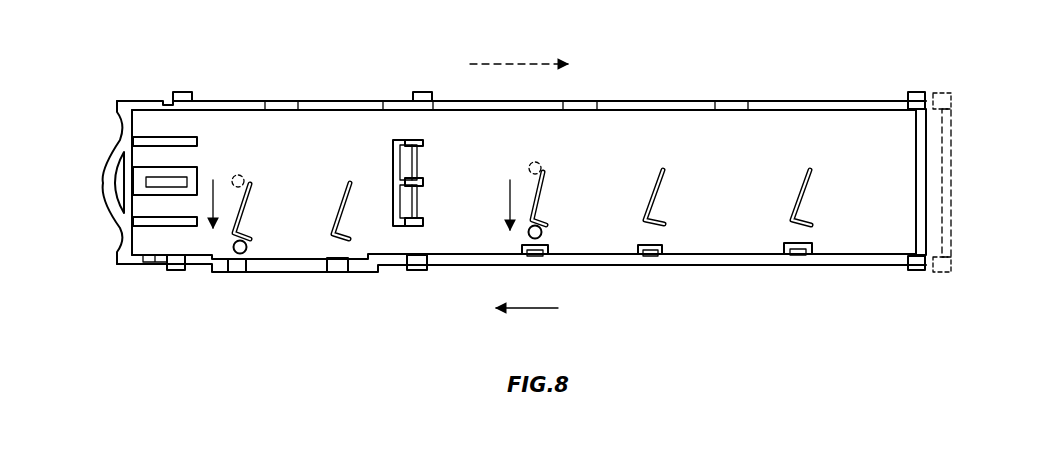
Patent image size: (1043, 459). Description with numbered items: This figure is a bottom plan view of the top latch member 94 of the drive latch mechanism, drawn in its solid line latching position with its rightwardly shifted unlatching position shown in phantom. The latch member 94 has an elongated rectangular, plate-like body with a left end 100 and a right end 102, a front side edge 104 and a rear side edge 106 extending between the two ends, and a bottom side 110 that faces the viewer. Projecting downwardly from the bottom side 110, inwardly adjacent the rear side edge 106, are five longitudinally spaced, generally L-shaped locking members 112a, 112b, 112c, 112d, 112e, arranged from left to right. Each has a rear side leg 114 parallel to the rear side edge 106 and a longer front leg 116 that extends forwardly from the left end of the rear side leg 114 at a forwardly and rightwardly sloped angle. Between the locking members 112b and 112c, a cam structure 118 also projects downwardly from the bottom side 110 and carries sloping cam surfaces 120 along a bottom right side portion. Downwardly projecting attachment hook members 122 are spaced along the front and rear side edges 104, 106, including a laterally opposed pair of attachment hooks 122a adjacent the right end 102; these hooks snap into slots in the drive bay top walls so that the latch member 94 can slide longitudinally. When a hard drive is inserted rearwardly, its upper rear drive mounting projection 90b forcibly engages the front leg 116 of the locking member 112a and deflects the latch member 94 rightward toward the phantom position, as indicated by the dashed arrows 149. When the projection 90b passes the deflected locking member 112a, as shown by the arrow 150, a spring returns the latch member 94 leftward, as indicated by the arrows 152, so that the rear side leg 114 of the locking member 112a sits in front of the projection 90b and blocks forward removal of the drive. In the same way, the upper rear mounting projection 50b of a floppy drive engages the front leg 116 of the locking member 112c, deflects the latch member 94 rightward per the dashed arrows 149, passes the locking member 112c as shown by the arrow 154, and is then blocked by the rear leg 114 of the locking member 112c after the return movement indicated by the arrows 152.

The left end 100 is at (110, 181).
The right end 102 is at (928, 158).
The front side edge 104 is at (338, 100).
The rear side edge 106 is at (698, 266).
The bottom side 110 is at (748, 174).
The locking member 112a is at (258, 177).
The locking member 112b is at (353, 170).
The locking member 112c is at (558, 184).
The locking member 112d is at (673, 164).
The locking member 112e is at (810, 164).
The rear side leg 114 is at (260, 233).
The front leg 116 is at (250, 212).
The cam structure 118 is at (447, 133).
The sloping cam surfaces 120 is at (424, 143).
The attachment hook members 122 is at (182, 91).
The attachment hook members 122a is at (910, 91).
The dashed arrows 149 is at (495, 66).
The arrow 150 is at (213, 203).
The arrows 152 is at (538, 310).
The arrow 154 is at (510, 180).
The mounting projection 50b is at (540, 166).
The drive mounting projection 90b is at (240, 176).
The top latch member 94 is at (639, 99).